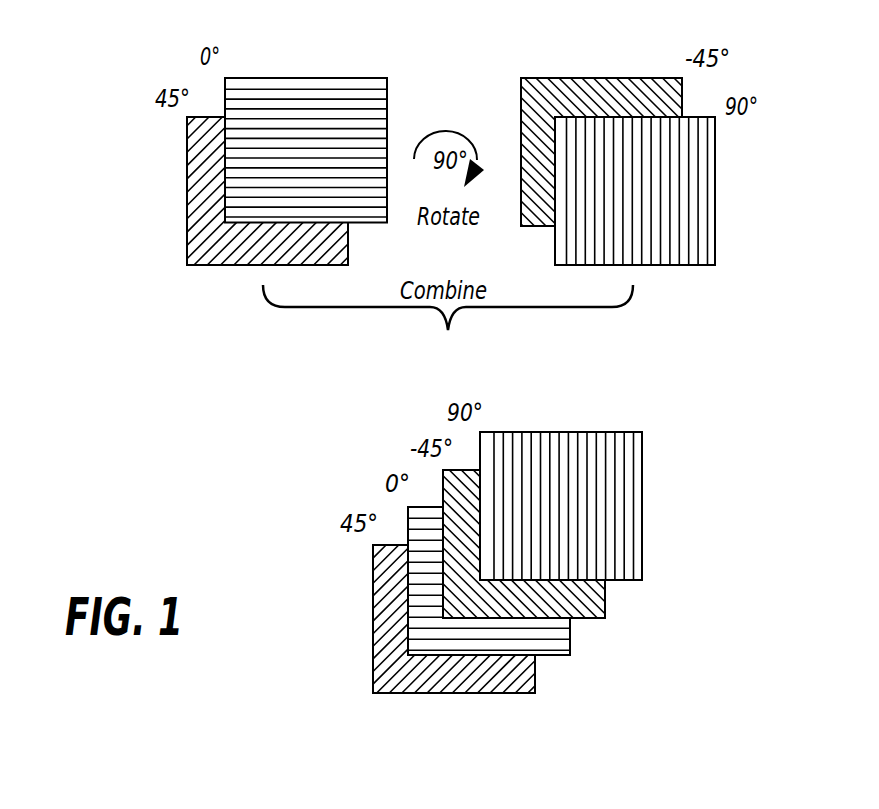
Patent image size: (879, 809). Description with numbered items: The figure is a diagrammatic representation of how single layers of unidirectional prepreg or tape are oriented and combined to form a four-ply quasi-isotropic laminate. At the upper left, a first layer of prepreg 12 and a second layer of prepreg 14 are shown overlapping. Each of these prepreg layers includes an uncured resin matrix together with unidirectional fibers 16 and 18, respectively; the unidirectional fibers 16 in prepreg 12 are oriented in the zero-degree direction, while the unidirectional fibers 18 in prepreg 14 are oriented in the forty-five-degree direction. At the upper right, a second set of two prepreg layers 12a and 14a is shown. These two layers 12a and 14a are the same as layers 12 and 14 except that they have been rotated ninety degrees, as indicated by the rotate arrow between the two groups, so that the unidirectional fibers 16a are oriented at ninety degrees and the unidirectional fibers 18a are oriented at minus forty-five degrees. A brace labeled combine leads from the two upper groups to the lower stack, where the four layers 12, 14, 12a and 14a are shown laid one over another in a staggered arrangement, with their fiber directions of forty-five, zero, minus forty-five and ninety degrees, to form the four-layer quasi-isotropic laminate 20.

The first layer of prepreg 12 is at (290, 78).
The second layer of prepreg 14 is at (187, 213).
The unidirectional fibers 16 is at (373, 120).
The unidirectional fibers 18 is at (221, 248).
The prepreg layer 12a is at (677, 265).
The prepreg layer 14a is at (555, 78).
The unidirectional fibers 16a is at (688, 205).
The unidirectional fibers 18a is at (603, 92).
The quasi-isotropic laminate 20 is at (324, 674).